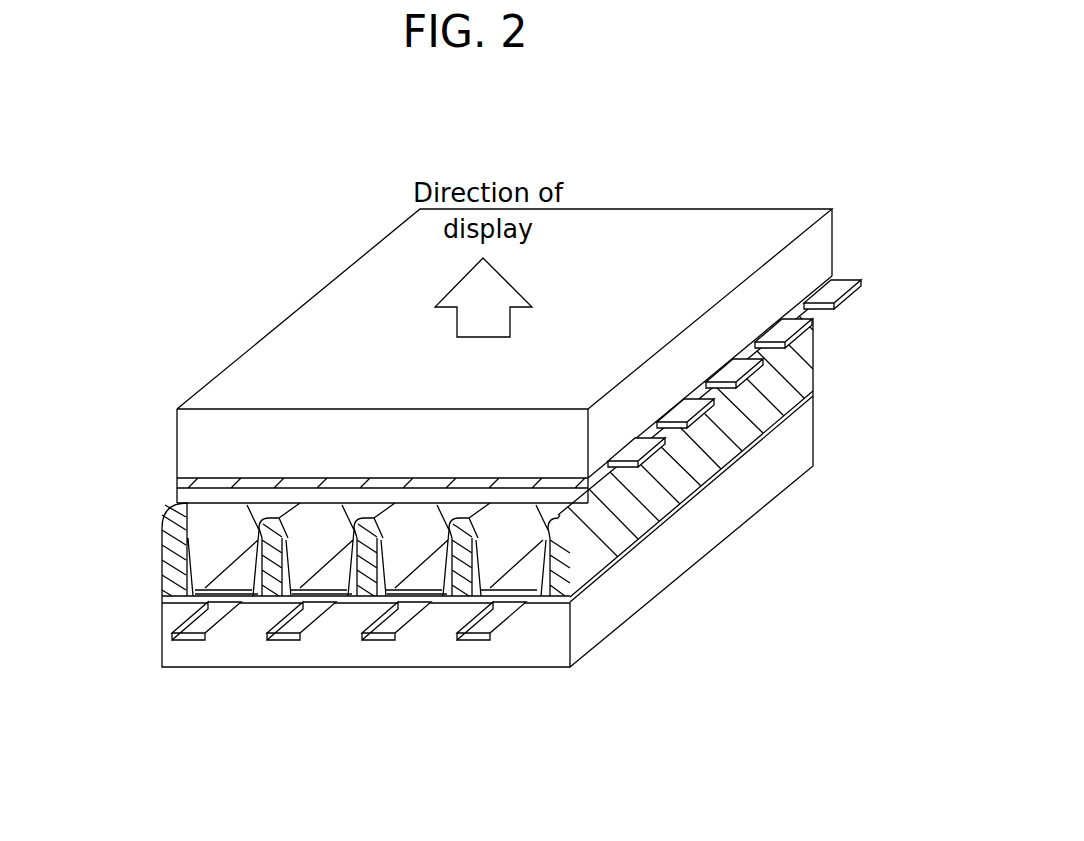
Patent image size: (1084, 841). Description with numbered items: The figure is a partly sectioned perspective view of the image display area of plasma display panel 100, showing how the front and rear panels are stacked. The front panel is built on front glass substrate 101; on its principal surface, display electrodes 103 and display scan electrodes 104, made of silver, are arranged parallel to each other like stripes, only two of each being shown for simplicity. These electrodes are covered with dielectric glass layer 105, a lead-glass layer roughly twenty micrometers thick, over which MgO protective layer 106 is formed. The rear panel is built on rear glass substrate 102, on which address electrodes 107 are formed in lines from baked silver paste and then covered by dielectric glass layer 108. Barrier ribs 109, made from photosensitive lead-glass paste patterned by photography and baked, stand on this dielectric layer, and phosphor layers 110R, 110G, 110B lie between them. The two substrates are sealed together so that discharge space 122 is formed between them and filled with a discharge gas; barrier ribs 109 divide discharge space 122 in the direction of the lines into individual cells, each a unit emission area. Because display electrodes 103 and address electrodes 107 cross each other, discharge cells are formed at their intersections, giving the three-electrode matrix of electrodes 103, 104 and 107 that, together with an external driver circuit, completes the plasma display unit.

The plasma display panel 100 is at (830, 438).
The front glass substrate 101 is at (190, 435).
The rear glass substrate 102 is at (552, 657).
The display electrodes 103 is at (775, 330).
The display scan electrodes 104 is at (813, 347).
The dielectric glass layer 105 is at (185, 480).
The MgO protective layer 106 is at (185, 495).
The address electrodes 107 is at (187, 628).
The dielectric glass layer 108 is at (168, 603).
The barrier ribs 109 is at (258, 537).
The phosphor layer 110R is at (233, 587).
The phosphor layer 110G is at (330, 587).
The phosphor layer 110B is at (422, 588).
The discharge space 122 is at (500, 528).